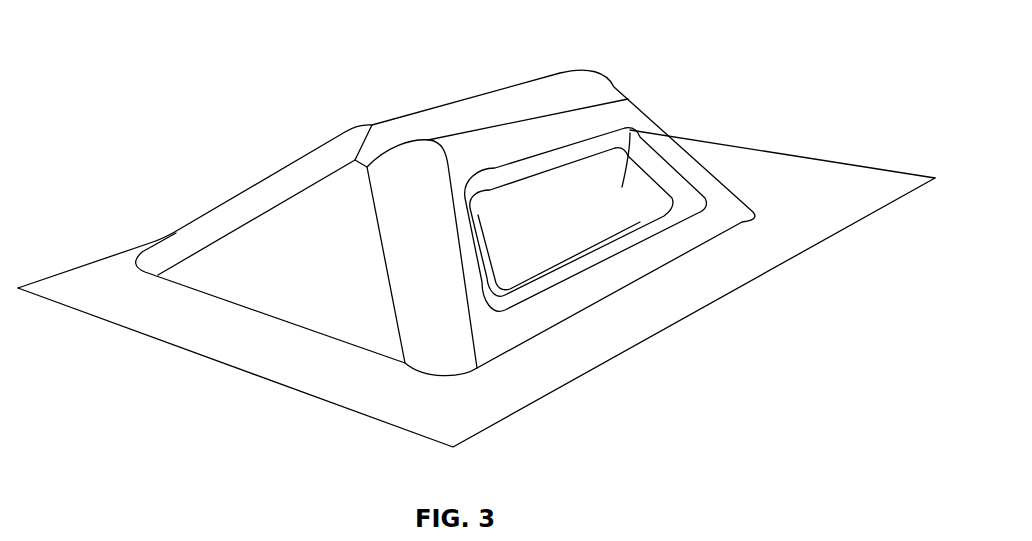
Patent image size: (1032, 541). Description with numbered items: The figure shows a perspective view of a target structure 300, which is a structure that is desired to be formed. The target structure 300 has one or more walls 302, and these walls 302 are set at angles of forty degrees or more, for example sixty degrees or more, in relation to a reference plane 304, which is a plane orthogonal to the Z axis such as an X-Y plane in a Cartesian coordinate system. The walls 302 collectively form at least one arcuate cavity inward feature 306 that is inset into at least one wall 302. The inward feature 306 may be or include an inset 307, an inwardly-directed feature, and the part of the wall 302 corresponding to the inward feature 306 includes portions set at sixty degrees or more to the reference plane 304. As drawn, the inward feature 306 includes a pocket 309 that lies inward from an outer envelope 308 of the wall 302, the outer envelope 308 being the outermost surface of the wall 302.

The target structure 300 is at (589, 54).
The wall 302 is at (297, 297).
The reference plane 304 is at (808, 170).
The inward feature 306 is at (660, 137).
The inset 307 is at (622, 188).
The outer envelope 308 is at (598, 122).
The pocket 309 is at (570, 238).